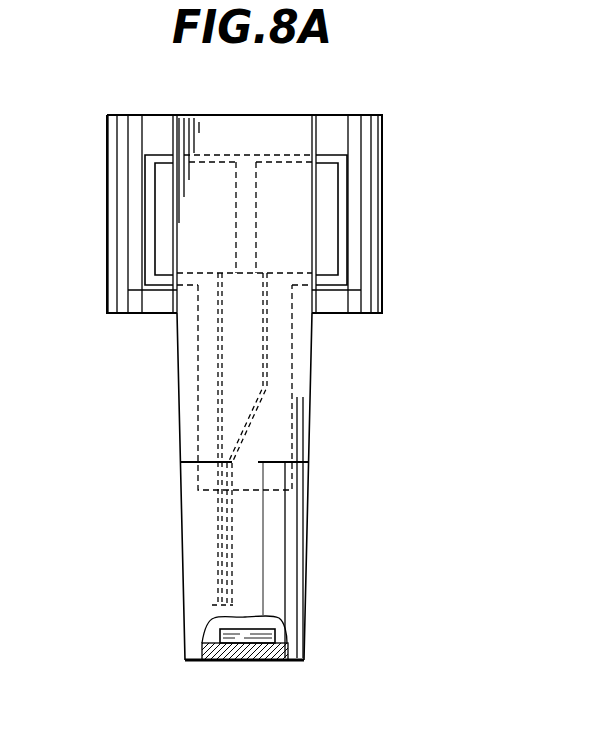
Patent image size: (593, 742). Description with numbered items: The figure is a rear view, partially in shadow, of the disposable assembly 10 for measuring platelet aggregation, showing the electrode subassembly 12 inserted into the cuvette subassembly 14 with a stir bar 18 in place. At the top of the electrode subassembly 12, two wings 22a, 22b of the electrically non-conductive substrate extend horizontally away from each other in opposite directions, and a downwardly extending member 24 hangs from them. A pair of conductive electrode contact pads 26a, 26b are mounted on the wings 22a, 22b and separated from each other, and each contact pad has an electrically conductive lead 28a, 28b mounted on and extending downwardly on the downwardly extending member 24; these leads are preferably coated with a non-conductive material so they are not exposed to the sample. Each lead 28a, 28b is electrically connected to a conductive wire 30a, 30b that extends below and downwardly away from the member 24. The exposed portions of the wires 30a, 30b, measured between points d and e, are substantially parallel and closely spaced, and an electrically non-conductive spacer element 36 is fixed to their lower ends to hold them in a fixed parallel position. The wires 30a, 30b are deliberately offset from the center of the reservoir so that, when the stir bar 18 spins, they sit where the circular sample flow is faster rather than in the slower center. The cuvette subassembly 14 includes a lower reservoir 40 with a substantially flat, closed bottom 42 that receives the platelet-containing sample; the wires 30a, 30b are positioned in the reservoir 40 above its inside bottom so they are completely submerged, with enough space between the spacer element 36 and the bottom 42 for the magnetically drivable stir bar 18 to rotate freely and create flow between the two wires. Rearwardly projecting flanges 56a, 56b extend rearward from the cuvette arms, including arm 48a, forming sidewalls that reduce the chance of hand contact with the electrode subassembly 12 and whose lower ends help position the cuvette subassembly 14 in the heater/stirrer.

The disposable assembly 10 is at (366, 93).
The electrode subassembly 12 is at (283, 148).
The cuvette subassembly 14 is at (352, 319).
The stir bar 18 is at (259, 662).
The wing 22a is at (148, 257).
The wing 22b is at (343, 177).
The downwardly extending member 24 is at (280, 428).
The electrode contact pad 26a is at (165, 208).
The electrode contact pad 26b is at (330, 218).
The electrically conductive lead 28a is at (198, 390).
The electrically conductive lead 28b is at (263, 387).
The conductive wire 30a is at (213, 600).
The conductive wire 30b is at (232, 580).
The spacer element 36 is at (220, 636).
The lower reservoir 40 is at (305, 583).
The closed bottom 42 is at (223, 663).
The arm 48a is at (150, 115).
The rearwardly projecting flange 56a is at (108, 138).
The rearwardly projecting flange 56b is at (378, 147).
The point d is at (213, 553).
The point e is at (215, 612).